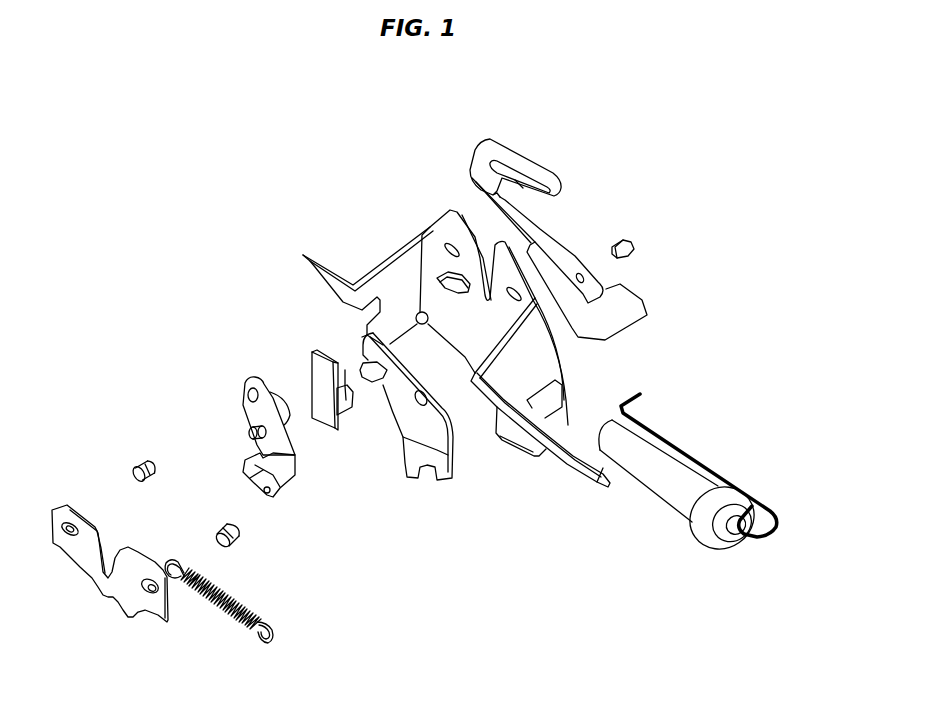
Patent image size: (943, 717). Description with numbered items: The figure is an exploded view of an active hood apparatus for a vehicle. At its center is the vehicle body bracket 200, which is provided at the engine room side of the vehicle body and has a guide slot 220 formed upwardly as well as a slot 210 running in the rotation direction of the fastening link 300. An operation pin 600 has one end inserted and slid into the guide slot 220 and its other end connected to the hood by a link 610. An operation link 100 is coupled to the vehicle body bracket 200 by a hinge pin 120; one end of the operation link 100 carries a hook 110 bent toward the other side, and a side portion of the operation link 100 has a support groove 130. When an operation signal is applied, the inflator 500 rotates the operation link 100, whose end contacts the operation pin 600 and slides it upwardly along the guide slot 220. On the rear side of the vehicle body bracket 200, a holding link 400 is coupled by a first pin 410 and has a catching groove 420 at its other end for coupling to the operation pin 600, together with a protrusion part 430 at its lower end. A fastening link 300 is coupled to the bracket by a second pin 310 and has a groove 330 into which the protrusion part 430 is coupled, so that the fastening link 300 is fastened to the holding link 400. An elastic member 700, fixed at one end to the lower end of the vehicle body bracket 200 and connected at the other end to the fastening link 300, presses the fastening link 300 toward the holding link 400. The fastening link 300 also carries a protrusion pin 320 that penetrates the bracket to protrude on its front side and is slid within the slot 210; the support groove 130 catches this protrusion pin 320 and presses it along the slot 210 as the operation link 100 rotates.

The operation link 100 is at (609, 270).
The hook 110 is at (524, 162).
The hinge pin 120 is at (634, 243).
The support groove 130 is at (538, 241).
The vehicle body bracket 200 is at (486, 310).
The slot 210 is at (438, 280).
The guide slot 220 is at (453, 240).
The fastening link 300 is at (266, 470).
The second pin 310 is at (133, 460).
The protrusion pin 320 is at (252, 398).
The groove 330 is at (285, 417).
The holding link 400 is at (396, 428).
The first pin 410 is at (240, 547).
The catching groove 420 is at (490, 432).
The protrusion part 430 is at (364, 378).
The inflator 500 is at (700, 478).
The operation pin 600 is at (266, 318).
The link 610 is at (313, 374).
The elastic member 700 is at (225, 617).